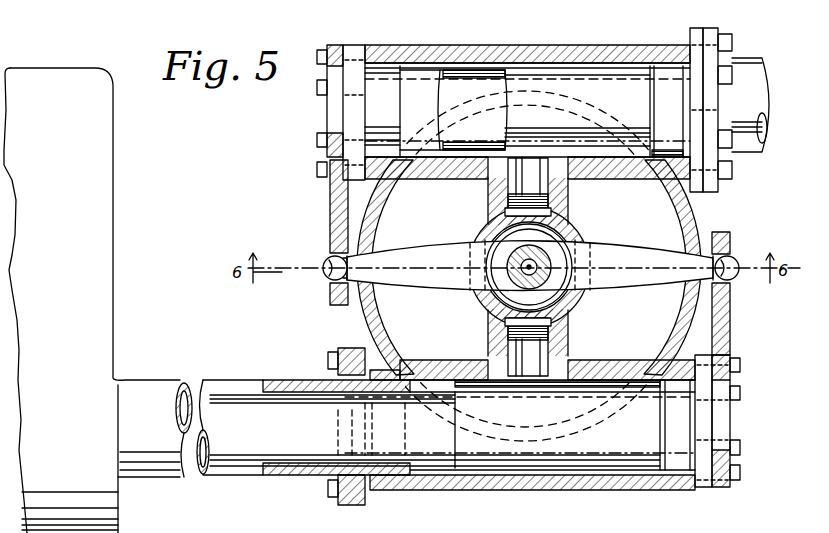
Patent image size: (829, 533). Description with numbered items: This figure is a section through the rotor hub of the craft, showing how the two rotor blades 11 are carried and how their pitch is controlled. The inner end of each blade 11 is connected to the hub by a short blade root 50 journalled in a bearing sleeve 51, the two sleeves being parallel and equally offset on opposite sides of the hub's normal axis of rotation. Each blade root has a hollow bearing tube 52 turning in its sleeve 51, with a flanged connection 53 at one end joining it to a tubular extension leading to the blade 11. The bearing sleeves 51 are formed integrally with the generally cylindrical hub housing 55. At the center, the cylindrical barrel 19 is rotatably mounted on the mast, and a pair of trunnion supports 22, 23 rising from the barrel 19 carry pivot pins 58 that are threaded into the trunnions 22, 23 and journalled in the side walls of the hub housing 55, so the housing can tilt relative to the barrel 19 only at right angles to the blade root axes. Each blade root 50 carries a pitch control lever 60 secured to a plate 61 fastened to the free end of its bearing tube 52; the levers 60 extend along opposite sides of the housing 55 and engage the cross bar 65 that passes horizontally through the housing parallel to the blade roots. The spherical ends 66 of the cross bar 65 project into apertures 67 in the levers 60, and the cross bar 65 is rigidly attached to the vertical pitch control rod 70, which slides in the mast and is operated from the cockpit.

The rotor blade 11 is at (118, 272).
The blade root 50 is at (752, 60).
The bearing sleeve 51 is at (502, 46).
The bearing tube 52 is at (458, 70).
The flanged connection 53 is at (700, 188).
The hub housing 55 is at (365, 207).
The pivot pin 58 is at (520, 182).
The pitch control lever 60 is at (333, 205).
The plate 61 is at (352, 46).
The cross bar 65 is at (647, 256).
The spherical end 66 is at (326, 266).
The aperture 67 is at (333, 280).
The barrel 19 is at (588, 240).
The pitch control rod 70 is at (540, 266).
The trunnion support 22 is at (568, 200).
The trunnion support 23 is at (568, 340).